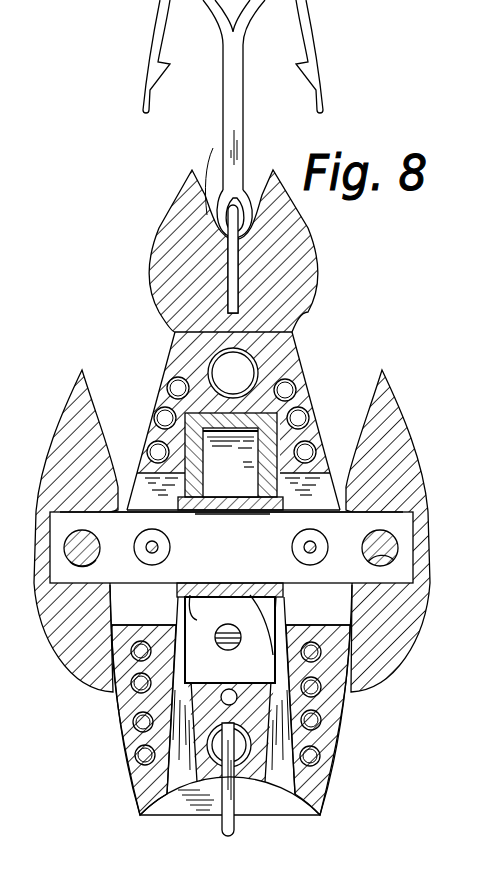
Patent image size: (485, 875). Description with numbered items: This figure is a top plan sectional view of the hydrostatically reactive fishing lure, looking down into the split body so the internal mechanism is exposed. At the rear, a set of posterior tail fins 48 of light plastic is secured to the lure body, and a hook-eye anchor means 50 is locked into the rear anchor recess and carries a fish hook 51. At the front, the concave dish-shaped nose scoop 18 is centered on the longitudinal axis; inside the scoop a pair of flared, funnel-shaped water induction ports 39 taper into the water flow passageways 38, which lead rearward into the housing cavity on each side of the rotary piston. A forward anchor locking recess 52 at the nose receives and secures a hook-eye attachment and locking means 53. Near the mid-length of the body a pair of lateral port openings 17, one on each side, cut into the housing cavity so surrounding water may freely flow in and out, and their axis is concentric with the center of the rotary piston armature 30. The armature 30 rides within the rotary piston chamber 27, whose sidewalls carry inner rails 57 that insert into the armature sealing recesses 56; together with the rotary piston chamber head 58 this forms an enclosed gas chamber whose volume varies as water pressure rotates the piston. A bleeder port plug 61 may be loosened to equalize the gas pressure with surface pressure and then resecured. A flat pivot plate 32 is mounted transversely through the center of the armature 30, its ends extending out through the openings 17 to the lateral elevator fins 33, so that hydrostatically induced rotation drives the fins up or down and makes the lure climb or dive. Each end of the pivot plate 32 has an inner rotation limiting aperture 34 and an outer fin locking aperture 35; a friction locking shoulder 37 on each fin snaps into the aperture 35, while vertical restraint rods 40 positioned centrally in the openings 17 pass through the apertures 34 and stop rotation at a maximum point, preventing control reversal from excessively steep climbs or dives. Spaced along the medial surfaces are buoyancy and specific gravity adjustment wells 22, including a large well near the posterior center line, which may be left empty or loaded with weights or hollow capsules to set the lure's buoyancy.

The hook 51 is at (240, 37).
The hook-eye anchor means 50 is at (214, 150).
The posterior tail fins 48 is at (152, 243).
The buoyancy and specific gravity adjustment wells 22 is at (150, 406).
The lateral elevator fins 33 is at (89, 437).
The rotary piston chamber 27 is at (256, 458).
The rotation limiting apertures 34 is at (140, 534).
The fin locking apertures 35 is at (362, 548).
The friction locking shoulder projection 37 is at (84, 562).
The vertical restraint rods 40 is at (157, 543).
The inner rails of the chamber sidewalls 57 is at (204, 537).
The rotary piston armature 30 is at (233, 581).
The pivot plate 32 is at (273, 565).
The lateral port openings 17 is at (139, 614).
The water flow passageways 38 is at (181, 612).
The rotary piston armature sealing recesses 56 is at (262, 596).
The bleeder port plug 61 is at (226, 646).
The rotary piston chamber head 58 is at (229, 655).
The funnel-shaped water induction ports 39 is at (140, 816).
The forward anchor locking recess 52 is at (243, 748).
The hook-eye attachment and locking means 53 is at (233, 834).
The nose scoop 18 is at (291, 814).